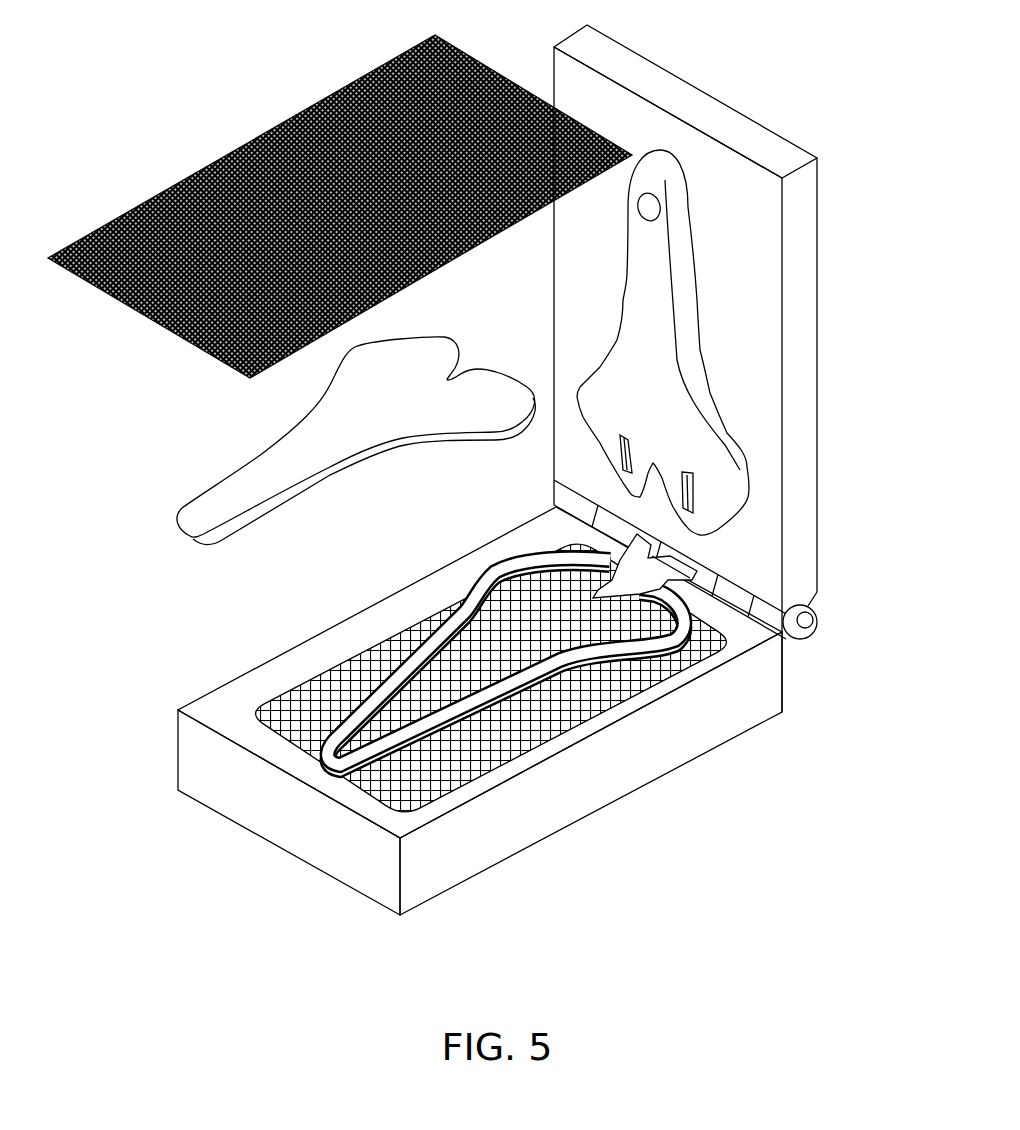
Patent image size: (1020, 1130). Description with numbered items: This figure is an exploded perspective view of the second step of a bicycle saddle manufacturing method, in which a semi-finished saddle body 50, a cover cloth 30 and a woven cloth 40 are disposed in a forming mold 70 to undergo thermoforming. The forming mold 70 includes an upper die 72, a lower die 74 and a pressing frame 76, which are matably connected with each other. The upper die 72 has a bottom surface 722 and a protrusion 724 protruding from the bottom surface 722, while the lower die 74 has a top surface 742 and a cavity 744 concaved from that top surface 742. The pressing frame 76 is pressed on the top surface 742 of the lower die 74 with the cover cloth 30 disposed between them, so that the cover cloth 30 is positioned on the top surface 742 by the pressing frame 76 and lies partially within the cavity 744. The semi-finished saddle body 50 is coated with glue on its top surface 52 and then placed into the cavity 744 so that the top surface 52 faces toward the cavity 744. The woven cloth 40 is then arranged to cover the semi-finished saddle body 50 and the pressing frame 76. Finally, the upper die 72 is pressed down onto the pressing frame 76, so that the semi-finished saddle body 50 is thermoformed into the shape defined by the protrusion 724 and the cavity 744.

The cover cloth 30 is at (450, 790).
The woven cloth 40 is at (325, 160).
The semi-finished saddle body 50 is at (349, 474).
The top surface 52 is at (283, 507).
The forming mold 70 is at (717, 357).
The upper die 72 is at (717, 368).
The bottom surface 722 is at (763, 372).
The protrusion 724 is at (657, 297).
The lower die 74 is at (459, 727).
The top surface 742 is at (222, 700).
The cavity 744 is at (350, 735).
The pressing frame 76 is at (498, 716).